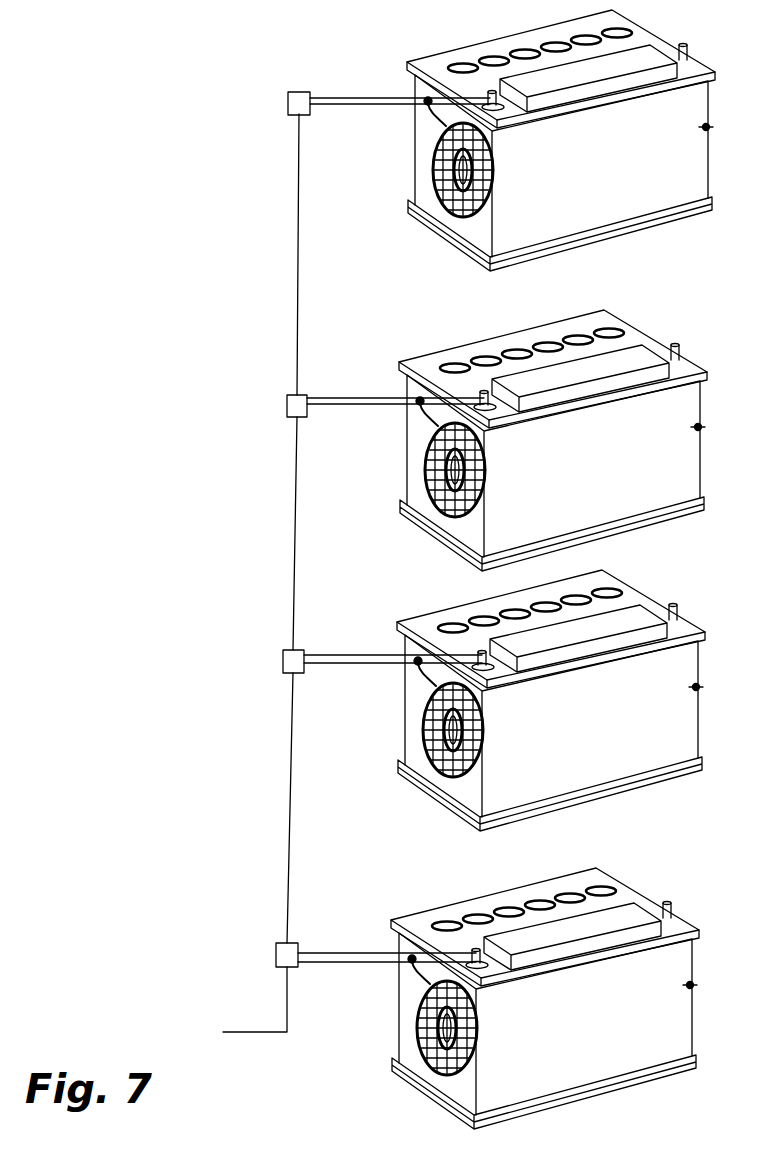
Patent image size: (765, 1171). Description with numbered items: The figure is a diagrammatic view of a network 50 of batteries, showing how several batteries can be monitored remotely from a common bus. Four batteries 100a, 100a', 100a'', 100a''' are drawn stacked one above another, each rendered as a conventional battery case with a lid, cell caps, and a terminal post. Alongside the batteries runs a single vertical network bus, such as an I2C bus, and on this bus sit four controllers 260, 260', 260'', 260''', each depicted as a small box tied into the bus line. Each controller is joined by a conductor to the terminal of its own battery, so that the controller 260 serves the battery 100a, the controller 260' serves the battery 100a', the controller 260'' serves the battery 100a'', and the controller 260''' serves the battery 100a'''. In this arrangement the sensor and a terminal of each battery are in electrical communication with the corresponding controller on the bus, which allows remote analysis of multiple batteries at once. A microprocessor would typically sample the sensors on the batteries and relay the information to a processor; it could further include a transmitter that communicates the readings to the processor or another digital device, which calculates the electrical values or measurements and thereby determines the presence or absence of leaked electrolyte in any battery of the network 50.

The network 50 is at (158, 538).
The battery 100a is at (561, 140).
The battery 100a' is at (553, 440).
The battery 100a'' is at (551, 700).
The battery 100a''' is at (545, 998).
The controller 260 is at (321, 99).
The controller 260' is at (314, 402).
The controller 260'' is at (297, 654).
The controller 260''' is at (293, 951).